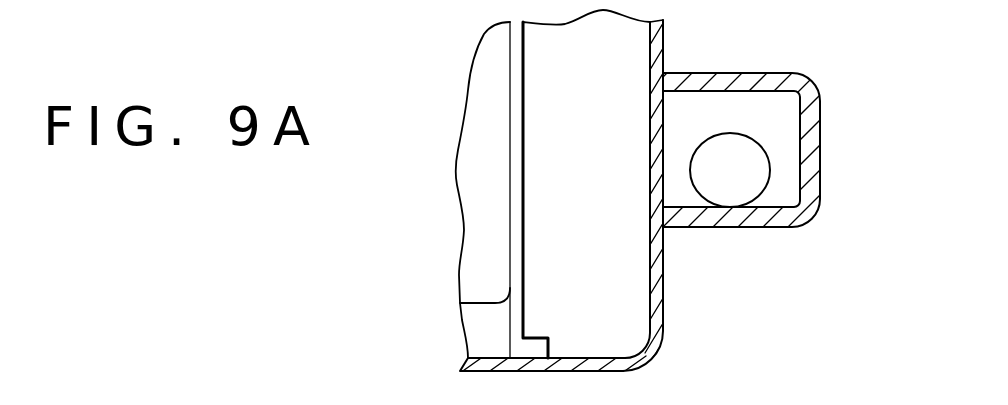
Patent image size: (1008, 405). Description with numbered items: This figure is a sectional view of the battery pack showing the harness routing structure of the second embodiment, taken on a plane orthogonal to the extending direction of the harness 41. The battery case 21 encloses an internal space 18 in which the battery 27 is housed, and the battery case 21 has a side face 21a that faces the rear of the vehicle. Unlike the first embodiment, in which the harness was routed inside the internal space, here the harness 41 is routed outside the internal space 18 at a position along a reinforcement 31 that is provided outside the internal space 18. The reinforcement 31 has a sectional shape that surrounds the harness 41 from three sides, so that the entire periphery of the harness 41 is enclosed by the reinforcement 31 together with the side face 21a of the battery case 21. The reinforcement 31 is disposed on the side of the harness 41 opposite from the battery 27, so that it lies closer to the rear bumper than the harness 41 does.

The internal space 18 is at (603, 250).
The battery case 21 is at (655, 45).
The side face 21a is at (663, 301).
The battery 27 is at (478, 169).
The reinforcement 31 is at (820, 110).
The harness 41 is at (770, 160).